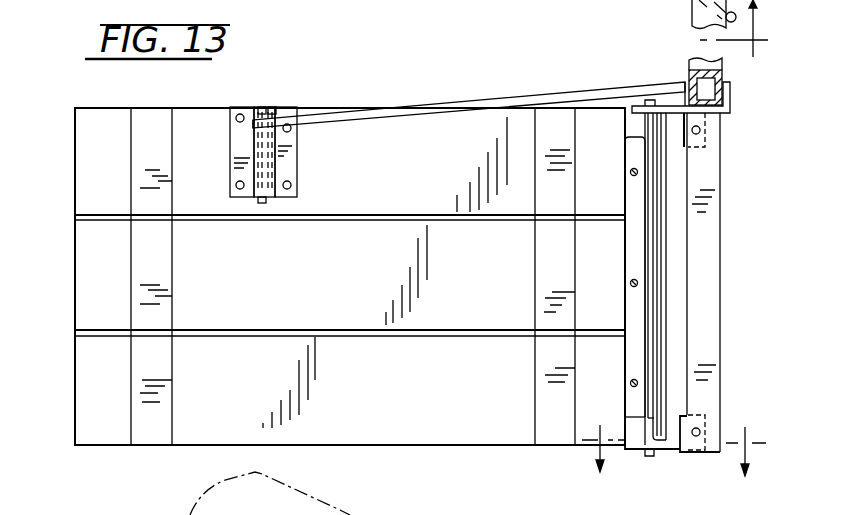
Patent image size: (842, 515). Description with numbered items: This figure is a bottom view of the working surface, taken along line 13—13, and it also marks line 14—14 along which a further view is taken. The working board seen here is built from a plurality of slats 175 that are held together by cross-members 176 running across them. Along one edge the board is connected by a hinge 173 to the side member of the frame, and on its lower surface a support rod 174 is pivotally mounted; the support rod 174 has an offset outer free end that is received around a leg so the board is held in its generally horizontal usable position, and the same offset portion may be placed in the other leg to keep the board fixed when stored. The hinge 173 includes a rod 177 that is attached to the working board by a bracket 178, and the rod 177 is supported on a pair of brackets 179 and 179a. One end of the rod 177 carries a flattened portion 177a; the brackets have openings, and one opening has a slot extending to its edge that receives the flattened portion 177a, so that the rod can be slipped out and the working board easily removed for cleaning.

The section line 13— 13 is at (776, 70).
The section line 14— 14 is at (674, 441).
The hinge 173 is at (620, 128).
The support rod 174 is at (443, 105).
The slats 175 is at (85, 175).
The cross-members 176 is at (145, 117).
The rod 177 is at (650, 265).
The flattened portion 177a is at (649, 456).
The bracket 178 is at (633, 202).
The bracket 179 is at (668, 107).
The bracket 179a is at (636, 452).